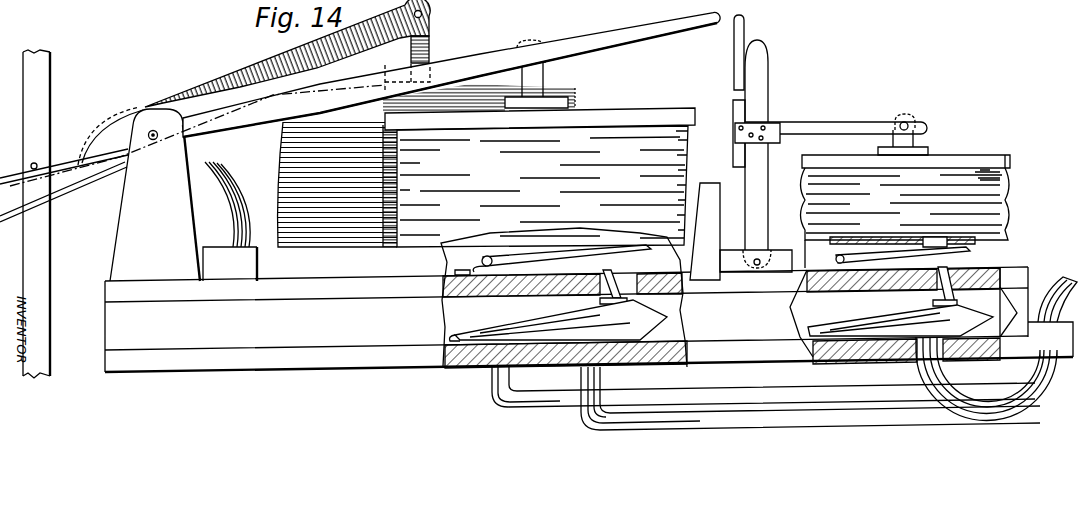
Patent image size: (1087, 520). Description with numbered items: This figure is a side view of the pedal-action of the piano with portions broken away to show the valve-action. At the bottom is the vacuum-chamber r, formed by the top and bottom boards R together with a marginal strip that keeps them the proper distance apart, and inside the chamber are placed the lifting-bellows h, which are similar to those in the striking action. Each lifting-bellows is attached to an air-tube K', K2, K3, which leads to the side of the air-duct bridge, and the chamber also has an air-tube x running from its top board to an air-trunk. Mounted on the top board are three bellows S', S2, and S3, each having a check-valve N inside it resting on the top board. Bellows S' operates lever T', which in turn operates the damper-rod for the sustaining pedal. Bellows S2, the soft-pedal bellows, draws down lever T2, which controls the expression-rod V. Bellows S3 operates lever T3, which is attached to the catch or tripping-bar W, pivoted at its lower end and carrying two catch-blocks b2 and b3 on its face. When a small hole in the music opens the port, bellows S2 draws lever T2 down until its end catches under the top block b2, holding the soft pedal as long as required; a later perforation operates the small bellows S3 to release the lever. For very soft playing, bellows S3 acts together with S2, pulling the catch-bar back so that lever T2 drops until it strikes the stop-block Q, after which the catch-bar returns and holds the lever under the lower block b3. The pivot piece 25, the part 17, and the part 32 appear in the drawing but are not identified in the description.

The expression-rod V is at (43, 244).
The pivot lug 25 is at (155, 195).
The air-tube x is at (230, 221).
The lever T' is at (287, 53).
The lever T2 is at (603, 34).
The lever T3 is at (828, 129).
The bellows S' is at (337, 184).
The soft-pedal bellows S2 is at (540, 177).
The small bellows S3 is at (906, 177).
The top catch-block b2 is at (734, 53).
The lower catch-block b3 is at (733, 103).
The catch or tripping-bar W is at (769, 97).
The stop-block Q is at (705, 231).
The check-valve N is at (563, 262).
The strip 17 is at (930, 240).
The vacuum-chamber r is at (877, 258).
The lifting-bellows h is at (721, 304).
The top and bottom boards R is at (589, 319).
The air-tube K' is at (810, 410).
The air-tube K2 is at (518, 427).
The air-tube K3 is at (1022, 416).
The curved arm 32 is at (1059, 299).